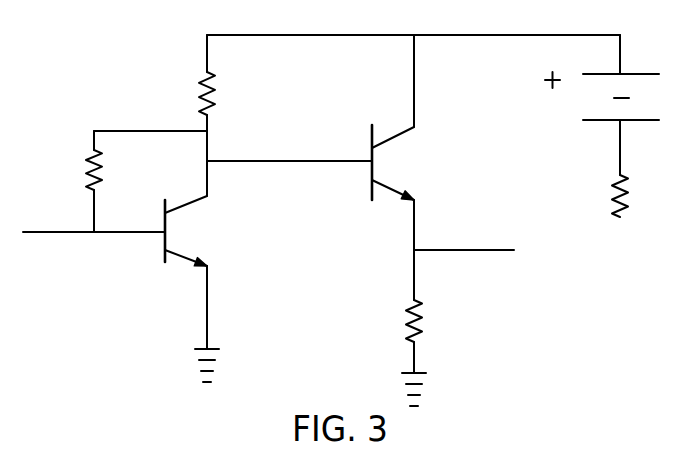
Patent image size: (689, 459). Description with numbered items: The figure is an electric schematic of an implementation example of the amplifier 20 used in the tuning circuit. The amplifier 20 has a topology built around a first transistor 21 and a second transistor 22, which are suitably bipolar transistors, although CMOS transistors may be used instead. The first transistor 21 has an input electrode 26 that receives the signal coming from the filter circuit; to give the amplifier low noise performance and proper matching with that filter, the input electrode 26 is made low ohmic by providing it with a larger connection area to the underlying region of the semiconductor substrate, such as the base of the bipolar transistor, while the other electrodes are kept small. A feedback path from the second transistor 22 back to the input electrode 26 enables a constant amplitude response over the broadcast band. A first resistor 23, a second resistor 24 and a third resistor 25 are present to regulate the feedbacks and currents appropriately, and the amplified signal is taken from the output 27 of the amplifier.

The amplifier 20 is at (77, 72).
The first transistor 21 is at (168, 278).
The second transistor 22 is at (375, 205).
The first resistor 23 is at (88, 168).
The second resistor 24 is at (215, 87).
The third resistor 25 is at (422, 330).
The input electrode of first transistor 26 is at (142, 232).
The output of the amplifier 27 is at (480, 252).